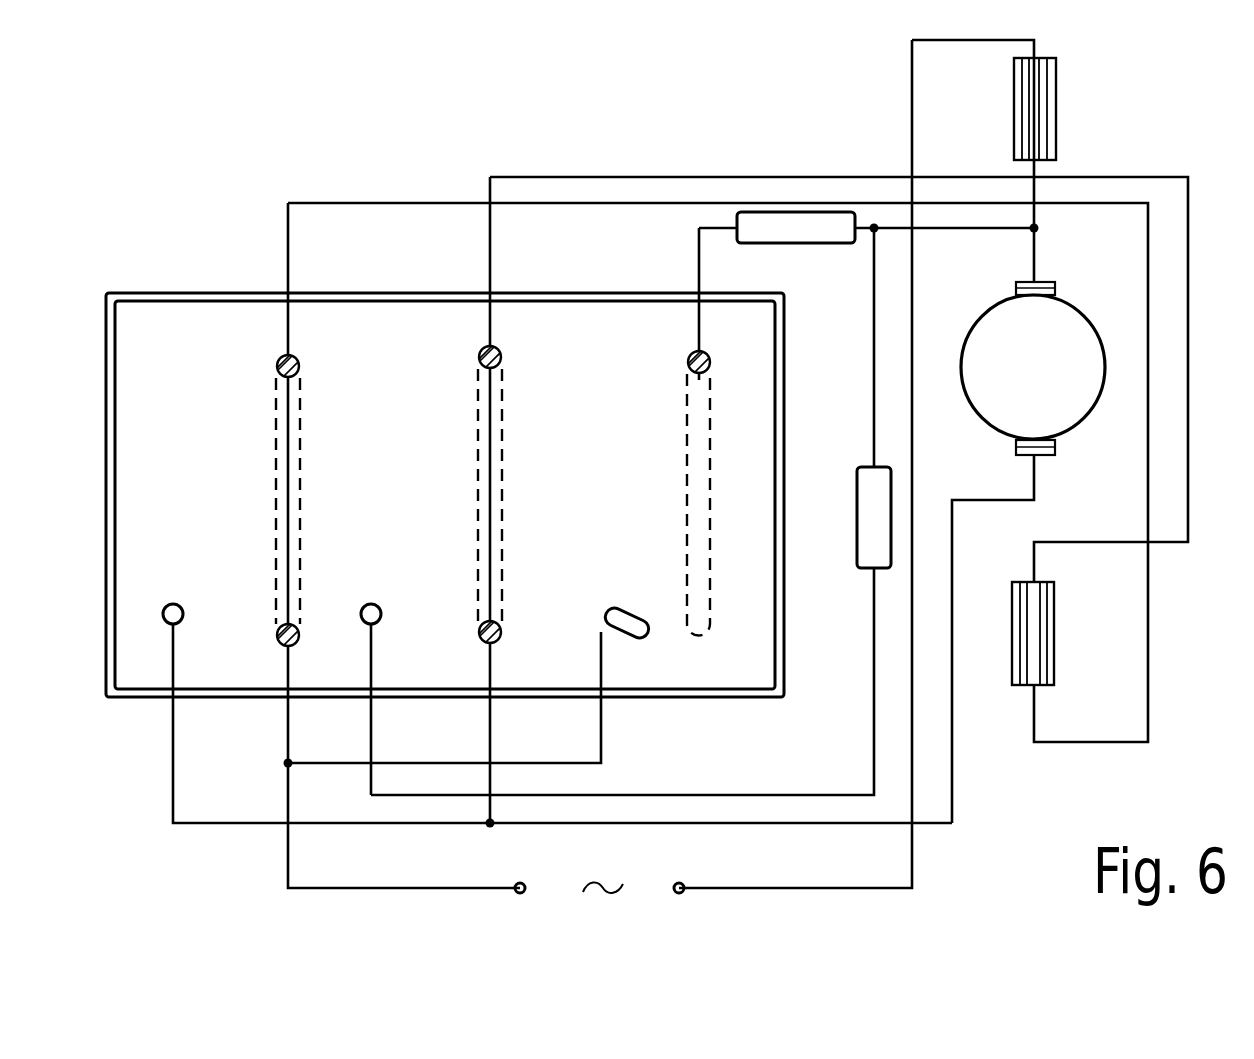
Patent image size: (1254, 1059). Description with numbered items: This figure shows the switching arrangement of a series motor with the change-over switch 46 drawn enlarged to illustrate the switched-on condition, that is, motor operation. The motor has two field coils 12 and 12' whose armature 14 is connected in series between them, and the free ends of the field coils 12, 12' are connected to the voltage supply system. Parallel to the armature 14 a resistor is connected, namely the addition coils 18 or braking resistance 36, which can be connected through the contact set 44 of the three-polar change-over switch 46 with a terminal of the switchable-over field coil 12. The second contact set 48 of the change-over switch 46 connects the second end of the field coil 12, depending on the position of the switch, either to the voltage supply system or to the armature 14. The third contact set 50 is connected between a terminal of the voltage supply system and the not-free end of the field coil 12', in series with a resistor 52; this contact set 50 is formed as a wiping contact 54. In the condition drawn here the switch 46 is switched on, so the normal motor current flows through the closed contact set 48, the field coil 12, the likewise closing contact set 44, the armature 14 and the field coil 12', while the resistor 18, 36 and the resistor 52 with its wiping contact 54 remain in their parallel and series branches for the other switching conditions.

The field coil 12 is at (738, 504).
The field coil 12' is at (1036, 134).
The armature 14 is at (1073, 303).
The addition coils 18 is at (857, 490).
The braking resistance 36 is at (874, 517).
The contact set 44 is at (478, 497).
The change-over switch 46 is at (111, 293).
The second contact set 48 is at (276, 490).
The contact set 50 is at (686, 492).
The resistor 52 is at (822, 243).
The wiping contact 54 is at (648, 638).